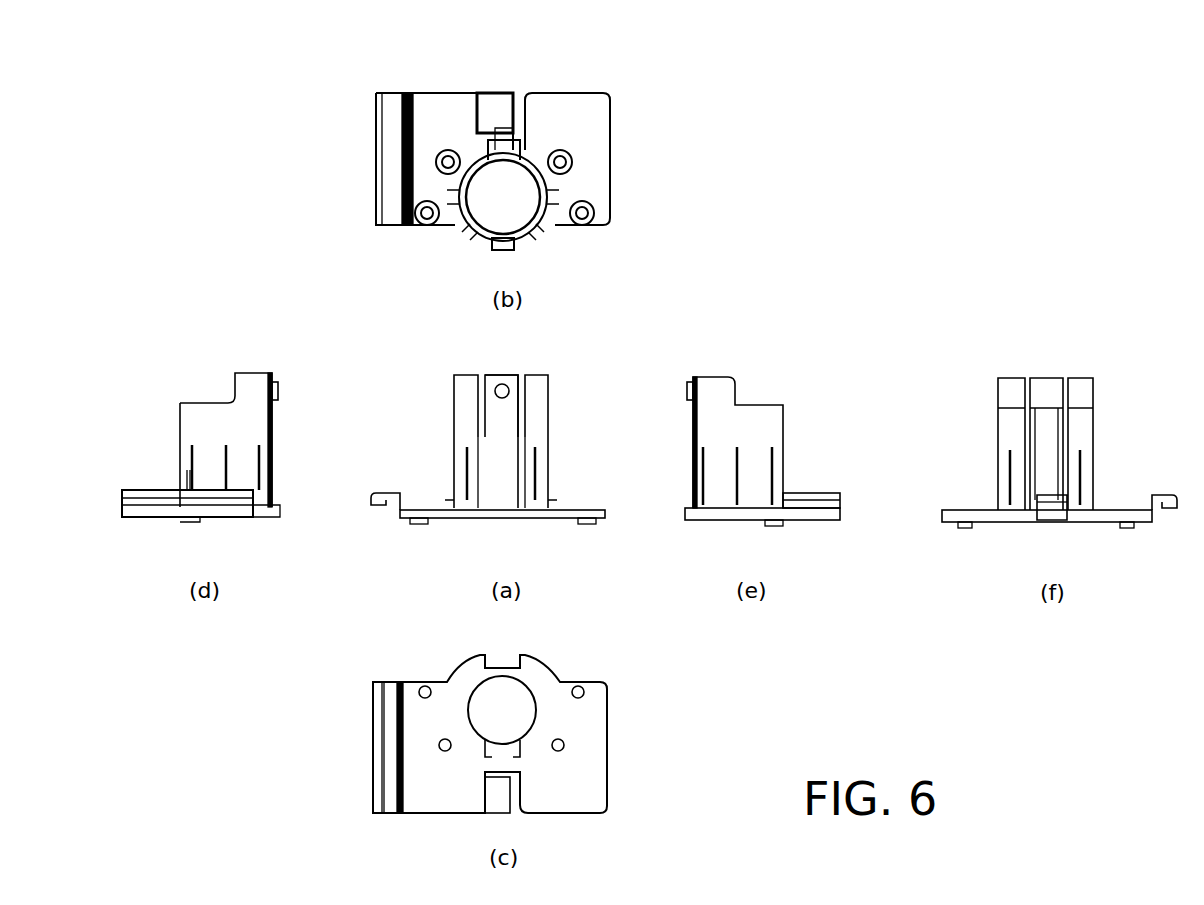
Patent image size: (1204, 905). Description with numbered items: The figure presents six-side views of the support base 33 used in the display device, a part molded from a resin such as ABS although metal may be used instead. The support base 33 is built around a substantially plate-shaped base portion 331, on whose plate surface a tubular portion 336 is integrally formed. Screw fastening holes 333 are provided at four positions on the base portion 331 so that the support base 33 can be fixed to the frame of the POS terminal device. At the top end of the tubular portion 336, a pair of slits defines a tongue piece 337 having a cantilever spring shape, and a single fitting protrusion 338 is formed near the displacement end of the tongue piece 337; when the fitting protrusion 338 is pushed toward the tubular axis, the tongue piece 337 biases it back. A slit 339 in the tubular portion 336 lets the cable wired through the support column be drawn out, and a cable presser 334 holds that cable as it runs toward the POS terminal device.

The support base 33 is at (438, 376).
The base portion 331 is at (597, 128).
The screw fastening holes 333 is at (420, 210).
The cable presser 334 is at (492, 100).
The tubular portion 336 is at (462, 232).
The tongue piece 337 is at (510, 415).
The fitting protrusion 338 is at (510, 247).
The slit 339 is at (507, 140).